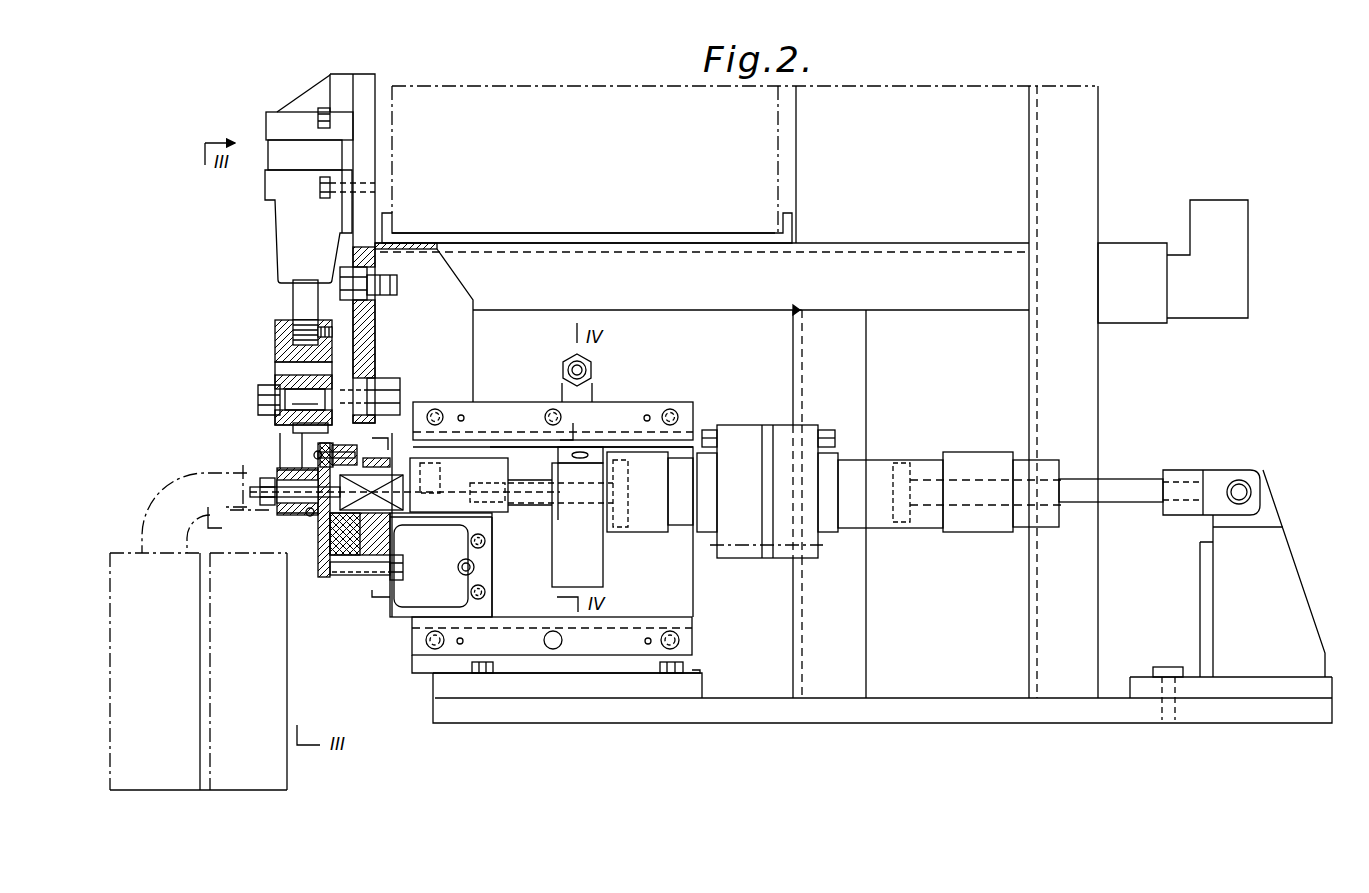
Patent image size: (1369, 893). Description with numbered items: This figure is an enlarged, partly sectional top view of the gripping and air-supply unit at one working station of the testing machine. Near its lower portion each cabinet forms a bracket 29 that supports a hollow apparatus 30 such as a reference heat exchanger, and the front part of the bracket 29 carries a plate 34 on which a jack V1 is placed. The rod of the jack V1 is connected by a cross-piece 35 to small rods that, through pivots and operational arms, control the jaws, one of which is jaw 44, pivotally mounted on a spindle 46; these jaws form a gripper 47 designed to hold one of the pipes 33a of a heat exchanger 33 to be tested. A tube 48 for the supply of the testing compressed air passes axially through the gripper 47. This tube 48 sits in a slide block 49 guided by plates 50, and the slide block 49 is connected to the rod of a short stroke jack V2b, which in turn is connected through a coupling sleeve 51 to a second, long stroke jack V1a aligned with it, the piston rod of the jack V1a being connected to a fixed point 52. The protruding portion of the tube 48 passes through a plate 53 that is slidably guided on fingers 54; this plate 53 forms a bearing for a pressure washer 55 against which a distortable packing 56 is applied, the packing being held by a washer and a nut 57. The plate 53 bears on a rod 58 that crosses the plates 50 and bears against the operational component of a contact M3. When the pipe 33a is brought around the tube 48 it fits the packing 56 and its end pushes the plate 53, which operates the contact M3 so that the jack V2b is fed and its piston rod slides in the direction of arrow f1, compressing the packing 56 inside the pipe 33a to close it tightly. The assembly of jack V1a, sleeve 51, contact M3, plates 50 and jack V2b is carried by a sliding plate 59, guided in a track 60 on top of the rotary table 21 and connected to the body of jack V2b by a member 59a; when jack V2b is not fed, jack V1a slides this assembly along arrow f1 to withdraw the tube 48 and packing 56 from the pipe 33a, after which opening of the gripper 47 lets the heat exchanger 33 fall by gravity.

The table 21 is at (709, 712).
The bracket 29 is at (915, 243).
The hollow apparatus 30 is at (594, 139).
The heat exchanger 33 is at (270, 716).
The pipe 33a is at (237, 525).
The plate 34 is at (368, 150).
The cross-piece 35 is at (275, 334).
The jaw 44 is at (292, 428).
The spindle 46 is at (292, 400).
The gripper 47 is at (286, 522).
The tube 48 is at (270, 500).
The slide block 49 is at (468, 489).
The plate 50 is at (372, 530).
The coupling sleeve 51 is at (762, 528).
The fixed point 52 is at (1240, 482).
The plate 53 is at (318, 555).
The finger 54 is at (358, 447).
The pressure washer 55 is at (310, 516).
The distortable packing 56 is at (296, 480).
The nut 57 is at (274, 480).
The rod 58 is at (351, 575).
The sliding plate 59 is at (690, 607).
The member 59a is at (562, 572).
The track 60 is at (645, 400).
The jack V1 is at (282, 210).
The second jack V1a is at (908, 466).
The jack V2b is at (645, 522).
The contact M3 is at (400, 605).
The arrow f1 is at (545, 530).